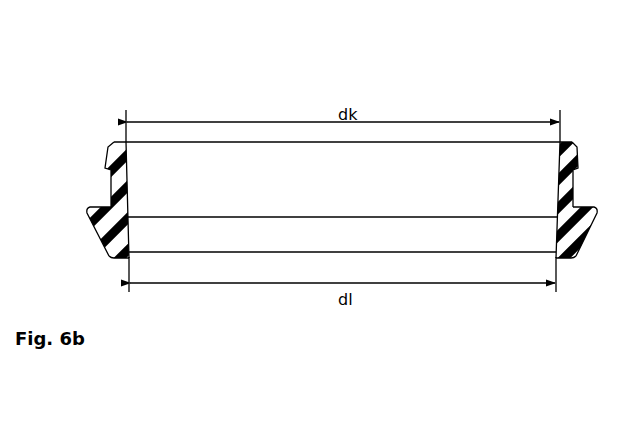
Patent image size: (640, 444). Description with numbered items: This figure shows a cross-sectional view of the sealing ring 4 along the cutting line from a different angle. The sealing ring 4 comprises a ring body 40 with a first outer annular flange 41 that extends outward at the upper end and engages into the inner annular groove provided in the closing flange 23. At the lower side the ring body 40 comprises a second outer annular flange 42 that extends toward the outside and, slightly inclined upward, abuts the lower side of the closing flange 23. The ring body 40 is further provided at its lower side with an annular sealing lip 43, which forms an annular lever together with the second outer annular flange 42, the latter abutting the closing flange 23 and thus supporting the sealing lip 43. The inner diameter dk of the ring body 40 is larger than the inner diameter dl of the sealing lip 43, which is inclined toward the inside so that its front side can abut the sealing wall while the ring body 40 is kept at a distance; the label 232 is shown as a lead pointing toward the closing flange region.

The sealing lip 232 is at (0, 18).
The closing flange 23 is at (0, 43).
The sealing ring 4 is at (237, 105).
The ring body 40 is at (423, 175).
The first outer annular flange 41 is at (106, 170).
The second outer annular flange 42 is at (90, 212).
The annular sealing lip 43 is at (110, 255).